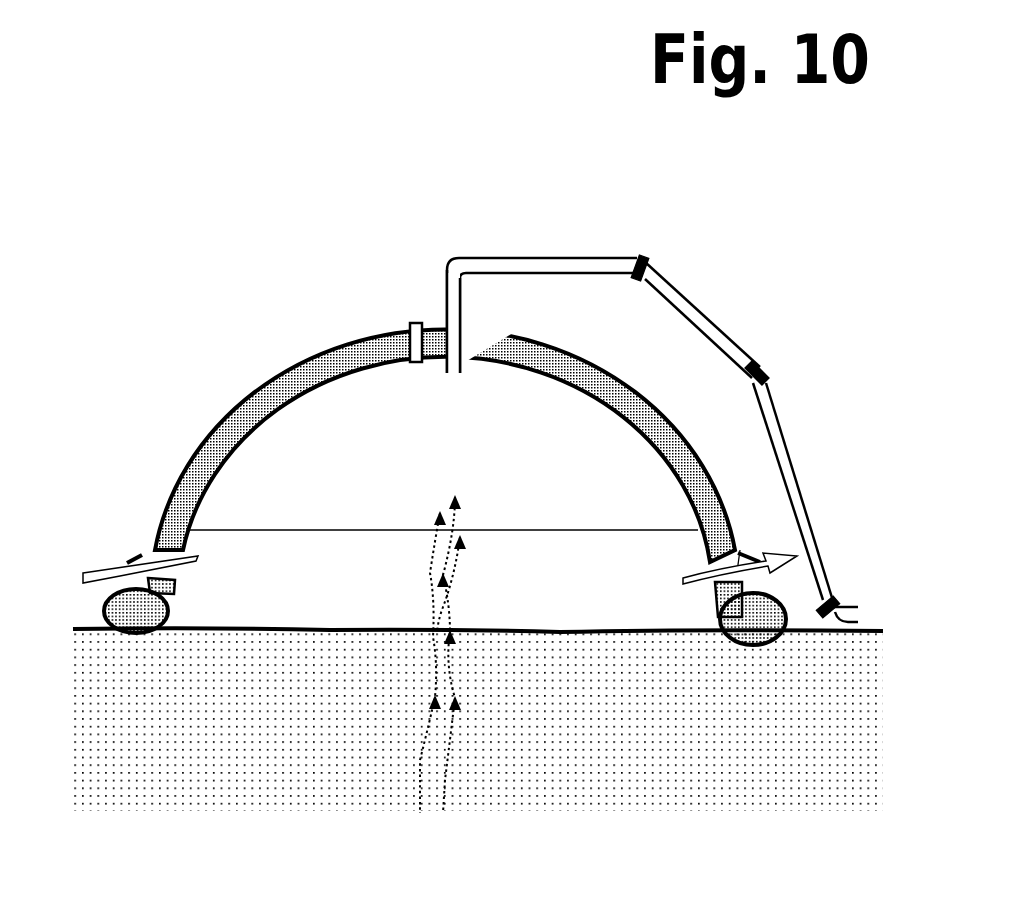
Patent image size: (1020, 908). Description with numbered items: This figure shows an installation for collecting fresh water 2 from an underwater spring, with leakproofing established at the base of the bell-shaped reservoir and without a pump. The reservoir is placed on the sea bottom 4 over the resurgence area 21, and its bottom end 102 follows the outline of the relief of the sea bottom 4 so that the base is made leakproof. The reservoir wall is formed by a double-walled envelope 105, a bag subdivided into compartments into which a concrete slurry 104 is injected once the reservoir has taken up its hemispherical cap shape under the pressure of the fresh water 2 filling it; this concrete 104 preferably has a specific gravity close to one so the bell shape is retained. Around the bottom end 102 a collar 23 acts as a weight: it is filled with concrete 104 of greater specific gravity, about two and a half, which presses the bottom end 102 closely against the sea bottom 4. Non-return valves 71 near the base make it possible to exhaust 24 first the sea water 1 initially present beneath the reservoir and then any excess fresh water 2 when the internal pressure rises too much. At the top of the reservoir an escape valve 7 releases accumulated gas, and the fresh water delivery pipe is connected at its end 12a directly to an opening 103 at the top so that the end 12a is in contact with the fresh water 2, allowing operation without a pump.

The sea water 1 is at (113, 250).
The fresh water 2 is at (357, 461).
The sea bottom 4 is at (287, 701).
The escape valve 7 is at (415, 318).
The non-return valve 71 is at (755, 498).
The bottom end of the reservoir 102 is at (172, 620).
The opening at the top of the reservoir 103 is at (463, 322).
The concrete slurry 104 is at (643, 340).
The double-walled envelope 105 is at (350, 342).
The end of the pipe 12a is at (468, 368).
The resurgence area 21 is at (457, 654).
The weight collar 23 is at (97, 605).
The exhaust 24 is at (90, 560).